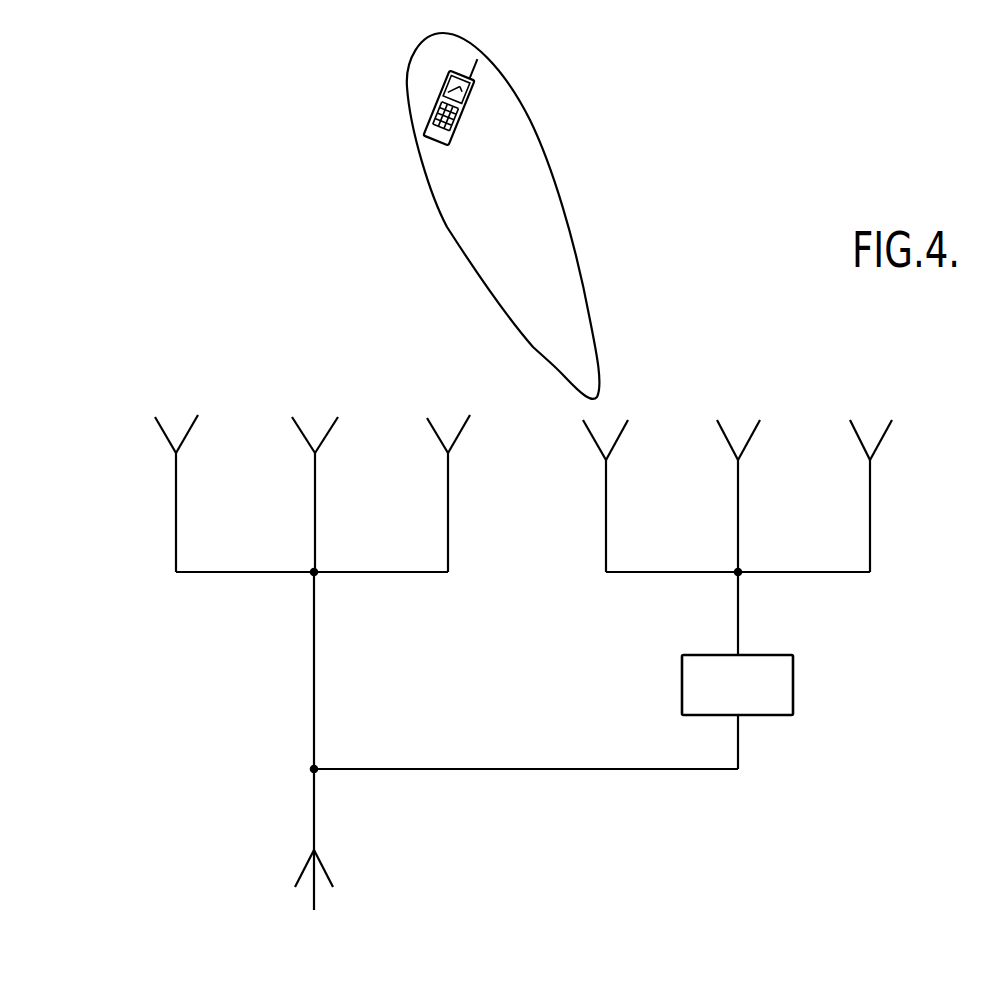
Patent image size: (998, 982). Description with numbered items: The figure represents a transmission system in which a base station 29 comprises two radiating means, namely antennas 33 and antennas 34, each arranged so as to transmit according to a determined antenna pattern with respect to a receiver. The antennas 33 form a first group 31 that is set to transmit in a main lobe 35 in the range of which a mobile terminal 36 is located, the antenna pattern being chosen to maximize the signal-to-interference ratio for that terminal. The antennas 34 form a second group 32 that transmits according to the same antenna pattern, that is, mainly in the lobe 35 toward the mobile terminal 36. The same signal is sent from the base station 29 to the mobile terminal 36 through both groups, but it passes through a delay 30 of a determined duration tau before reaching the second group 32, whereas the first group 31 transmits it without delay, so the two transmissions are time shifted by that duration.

The base station 29 is at (757, 783).
The delay 30 is at (794, 697).
The first group of antennas 31 is at (286, 523).
The second group of antennas 32 is at (719, 537).
The radiating means 33 is at (165, 438).
The radiating means 34 is at (595, 442).
The main lobe 35 is at (553, 182).
The mobile terminal 36 is at (435, 106).